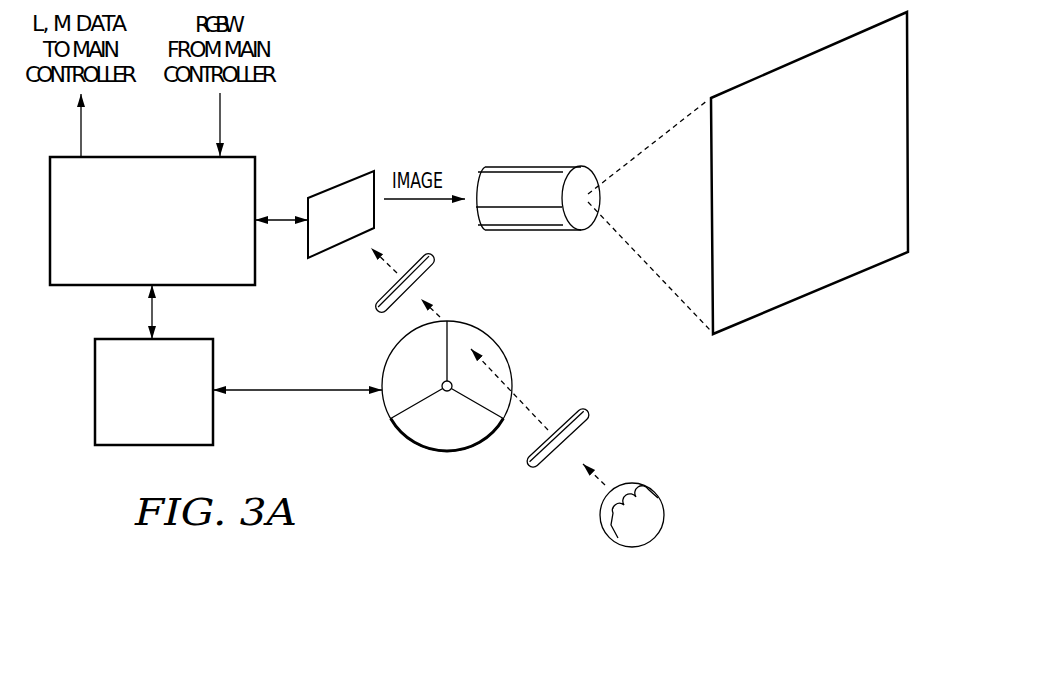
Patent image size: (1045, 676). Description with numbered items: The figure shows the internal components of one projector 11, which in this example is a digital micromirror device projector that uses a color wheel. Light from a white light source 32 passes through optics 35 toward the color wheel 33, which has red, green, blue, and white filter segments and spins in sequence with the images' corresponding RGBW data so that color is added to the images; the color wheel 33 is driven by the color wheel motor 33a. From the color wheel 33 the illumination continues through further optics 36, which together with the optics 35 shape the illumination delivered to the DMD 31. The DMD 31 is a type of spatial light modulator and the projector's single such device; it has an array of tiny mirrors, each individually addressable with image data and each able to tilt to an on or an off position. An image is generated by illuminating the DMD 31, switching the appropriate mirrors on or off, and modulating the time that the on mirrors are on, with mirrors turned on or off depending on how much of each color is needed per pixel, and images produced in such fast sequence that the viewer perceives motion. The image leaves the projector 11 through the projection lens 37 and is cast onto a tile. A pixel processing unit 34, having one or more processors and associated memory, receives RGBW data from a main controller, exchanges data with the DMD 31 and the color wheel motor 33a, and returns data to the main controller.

The projector 11 is at (660, 57).
The DMD 31 is at (355, 192).
The white light source 32 is at (600, 513).
The color wheel 33 is at (472, 323).
The color wheel motor 33a is at (95, 390).
The pixel processing unit 34 is at (150, 157).
The optics 35 is at (563, 413).
The optics 36 is at (413, 257).
The projection lens 37 is at (543, 232).